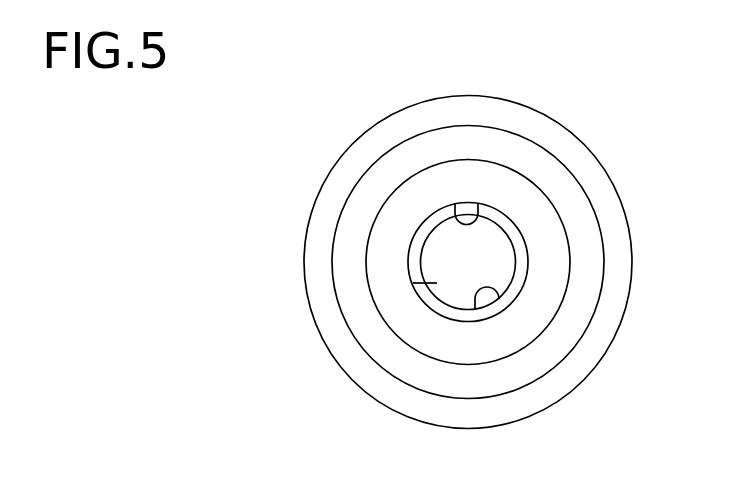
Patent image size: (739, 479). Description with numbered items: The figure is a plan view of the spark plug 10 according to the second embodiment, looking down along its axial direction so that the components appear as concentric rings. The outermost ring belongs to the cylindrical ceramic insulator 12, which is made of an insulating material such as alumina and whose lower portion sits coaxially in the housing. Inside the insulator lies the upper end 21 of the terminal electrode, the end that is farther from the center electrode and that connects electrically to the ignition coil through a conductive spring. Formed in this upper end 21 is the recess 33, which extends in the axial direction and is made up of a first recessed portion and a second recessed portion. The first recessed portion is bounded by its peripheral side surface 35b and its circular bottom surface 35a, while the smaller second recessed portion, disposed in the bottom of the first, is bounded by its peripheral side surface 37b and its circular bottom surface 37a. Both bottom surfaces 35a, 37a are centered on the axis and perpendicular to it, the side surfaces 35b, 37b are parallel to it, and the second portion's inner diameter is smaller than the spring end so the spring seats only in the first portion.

The spark plug 10 is at (634, 129).
The ceramic insulator 12 is at (303, 268).
The upper end 21 is at (395, 192).
The recess 33 is at (508, 262).
The bottom surface 35a is at (438, 216).
The peripheral side surface 35b is at (478, 215).
The bottom surface 37a is at (415, 283).
The peripheral side surface 37b is at (497, 292).